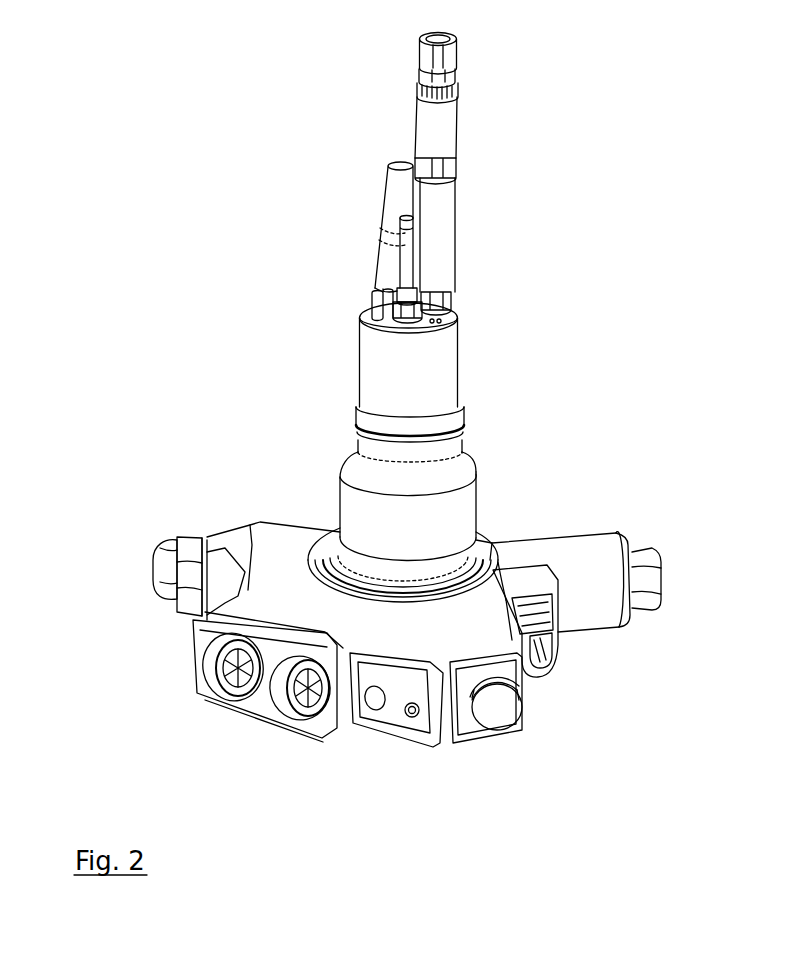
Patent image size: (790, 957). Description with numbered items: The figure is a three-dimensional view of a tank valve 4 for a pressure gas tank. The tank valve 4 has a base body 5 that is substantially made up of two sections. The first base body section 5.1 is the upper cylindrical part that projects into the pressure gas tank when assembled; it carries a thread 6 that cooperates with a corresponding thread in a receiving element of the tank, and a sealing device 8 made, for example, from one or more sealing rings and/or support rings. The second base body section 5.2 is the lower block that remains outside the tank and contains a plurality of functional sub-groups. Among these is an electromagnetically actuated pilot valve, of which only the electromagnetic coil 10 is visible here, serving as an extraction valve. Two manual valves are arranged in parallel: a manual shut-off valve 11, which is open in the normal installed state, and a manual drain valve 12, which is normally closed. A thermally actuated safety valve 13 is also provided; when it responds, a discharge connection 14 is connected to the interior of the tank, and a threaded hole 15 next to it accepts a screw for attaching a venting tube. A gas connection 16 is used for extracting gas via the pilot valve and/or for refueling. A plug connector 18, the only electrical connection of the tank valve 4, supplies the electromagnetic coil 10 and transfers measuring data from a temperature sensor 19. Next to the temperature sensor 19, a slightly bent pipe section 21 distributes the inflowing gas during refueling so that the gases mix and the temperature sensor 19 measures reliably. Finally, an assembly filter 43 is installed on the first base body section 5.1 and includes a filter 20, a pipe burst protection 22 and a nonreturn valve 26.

The tank valve 4 is at (509, 445).
The base body 5 is at (305, 518).
The first base body section 5.1 is at (432, 383).
The second base body section 5.2 is at (300, 587).
The thread 6 is at (466, 521).
The sealing device 8 is at (390, 428).
The electromagnetic coil 10 is at (605, 590).
The manual shut-off valve 11 is at (222, 681).
The manual drain valve 12 is at (298, 714).
The thermally actuated safety valve 13 is at (490, 712).
The discharge connection 14 is at (382, 700).
The threaded hole 15 is at (415, 712).
The gas connection 16 is at (190, 568).
The plug connector 18 is at (558, 660).
The temperature sensor 19 is at (393, 205).
The filter 20 is at (428, 246).
The bent pipe section 21 is at (400, 222).
The pipe burst protection 22 is at (447, 76).
The nonreturn valve 26 is at (449, 116).
The assembly filter 43 is at (470, 142).